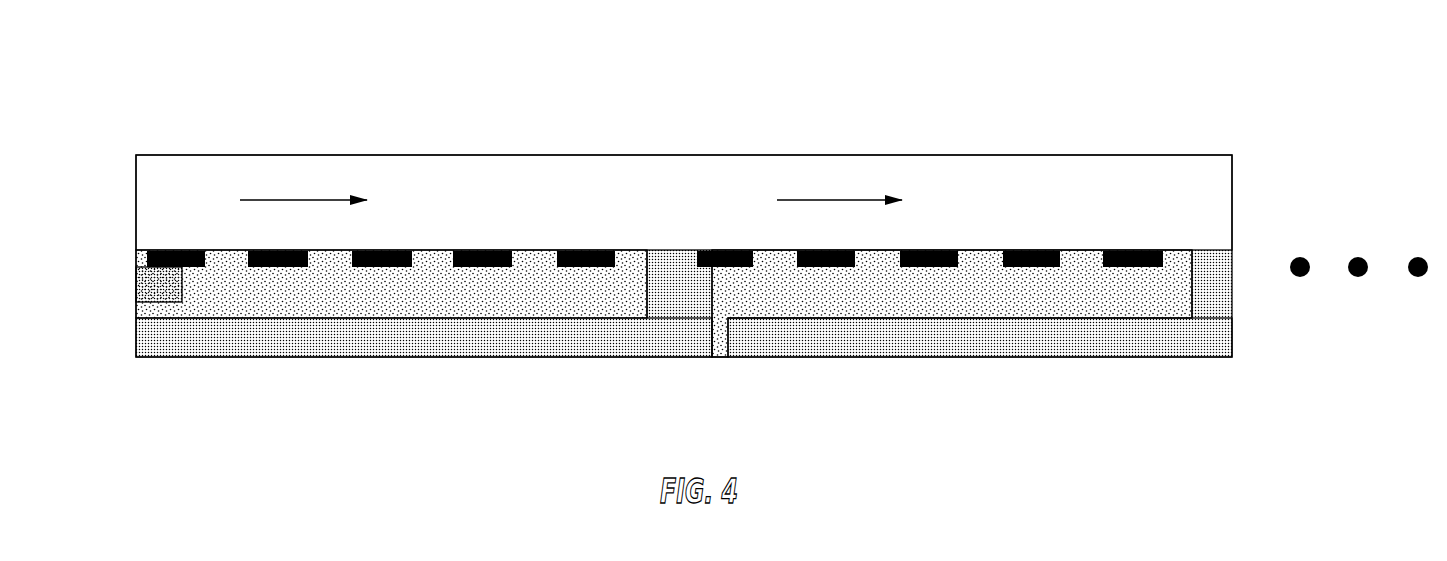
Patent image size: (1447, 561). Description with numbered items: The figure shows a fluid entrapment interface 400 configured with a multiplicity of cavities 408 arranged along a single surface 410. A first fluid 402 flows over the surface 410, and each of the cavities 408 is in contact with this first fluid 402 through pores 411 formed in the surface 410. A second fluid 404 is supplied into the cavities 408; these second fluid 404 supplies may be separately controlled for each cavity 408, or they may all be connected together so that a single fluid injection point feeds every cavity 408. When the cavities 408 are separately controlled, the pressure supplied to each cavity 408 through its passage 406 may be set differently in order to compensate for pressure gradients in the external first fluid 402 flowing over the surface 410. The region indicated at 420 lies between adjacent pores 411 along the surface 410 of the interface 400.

The fluid entrapment interface 400 is at (415, 60).
The first fluid 402 is at (655, 185).
The second fluid 404 is at (372, 287).
The passage 406 is at (143, 313).
The cavities 408 is at (535, 275).
The surface 410 is at (1030, 250).
The pores 411 is at (798, 248).
The gap between electrodes 420 is at (432, 256).